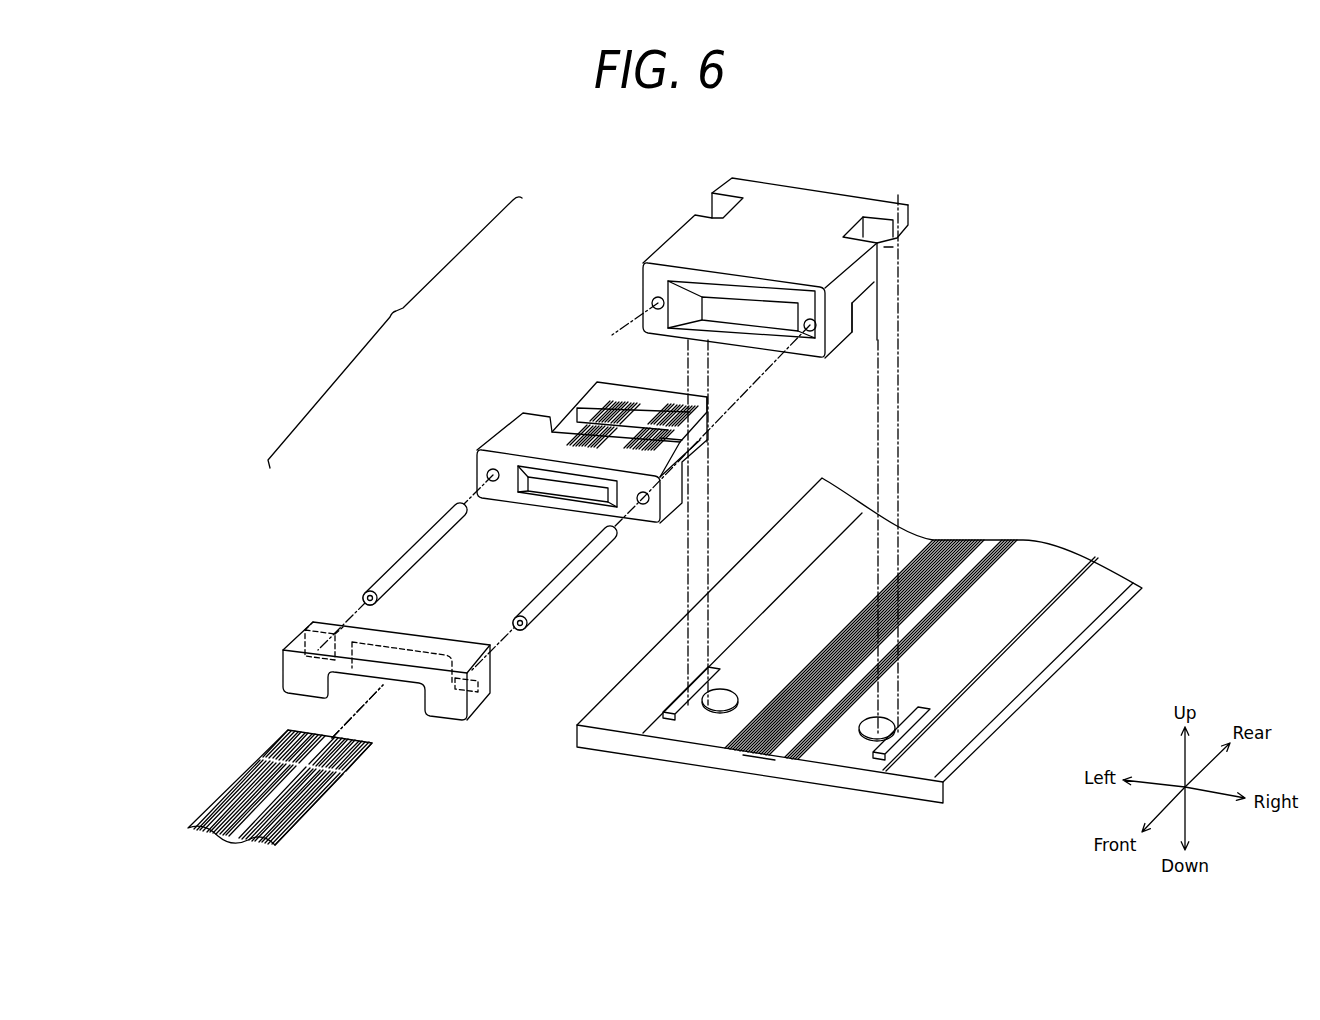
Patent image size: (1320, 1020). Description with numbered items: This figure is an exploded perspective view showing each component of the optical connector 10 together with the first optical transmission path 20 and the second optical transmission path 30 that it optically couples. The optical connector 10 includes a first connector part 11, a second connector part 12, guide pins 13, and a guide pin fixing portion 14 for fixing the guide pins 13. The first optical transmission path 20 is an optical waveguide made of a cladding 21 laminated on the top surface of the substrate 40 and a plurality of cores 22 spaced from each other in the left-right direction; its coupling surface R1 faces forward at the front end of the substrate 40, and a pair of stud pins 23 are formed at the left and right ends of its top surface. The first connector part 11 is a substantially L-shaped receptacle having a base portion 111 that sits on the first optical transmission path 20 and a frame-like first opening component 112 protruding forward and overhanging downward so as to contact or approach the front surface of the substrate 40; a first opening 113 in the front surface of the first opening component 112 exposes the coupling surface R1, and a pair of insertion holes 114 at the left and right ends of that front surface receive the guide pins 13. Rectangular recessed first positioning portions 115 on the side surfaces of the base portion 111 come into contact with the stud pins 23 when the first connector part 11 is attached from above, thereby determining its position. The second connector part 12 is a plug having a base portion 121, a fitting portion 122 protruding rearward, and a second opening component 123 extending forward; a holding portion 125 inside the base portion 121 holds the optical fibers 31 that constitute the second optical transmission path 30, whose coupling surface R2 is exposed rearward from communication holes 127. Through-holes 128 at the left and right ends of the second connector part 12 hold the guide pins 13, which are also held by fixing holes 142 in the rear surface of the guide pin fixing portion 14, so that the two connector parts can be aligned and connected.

The optical connector 10 is at (395, 332).
The first connector part 11 is at (743, 271).
The base portion 111 is at (903, 235).
The first opening component 112 is at (838, 328).
The first opening 113 is at (740, 318).
The insertion holes 114 is at (810, 319).
The first positioning portions 115 is at (890, 243).
The second connector part 12 is at (597, 442).
The base portion 121 is at (695, 474).
The fitting portion 122 is at (703, 410).
The second opening component 123 is at (668, 500).
The holding portion 125 is at (678, 437).
The communication holes 127 is at (655, 395).
The through-holes 128 is at (492, 473).
The guide pins 13 is at (560, 583).
The guide pin fixing portion 14 is at (412, 583).
The fixing holes 142 is at (305, 638).
The first optical transmission path 20 is at (866, 636).
The cladding 21 is at (958, 665).
The cores 22 is at (940, 532).
The stud pins 23 is at (718, 705).
The second optical transmission path 30 is at (276, 794).
The optical fibers 31 is at (222, 806).
The substrate 40 is at (1094, 637).
The coupling surface R1 is at (763, 764).
The coupling surface R2 is at (355, 740).